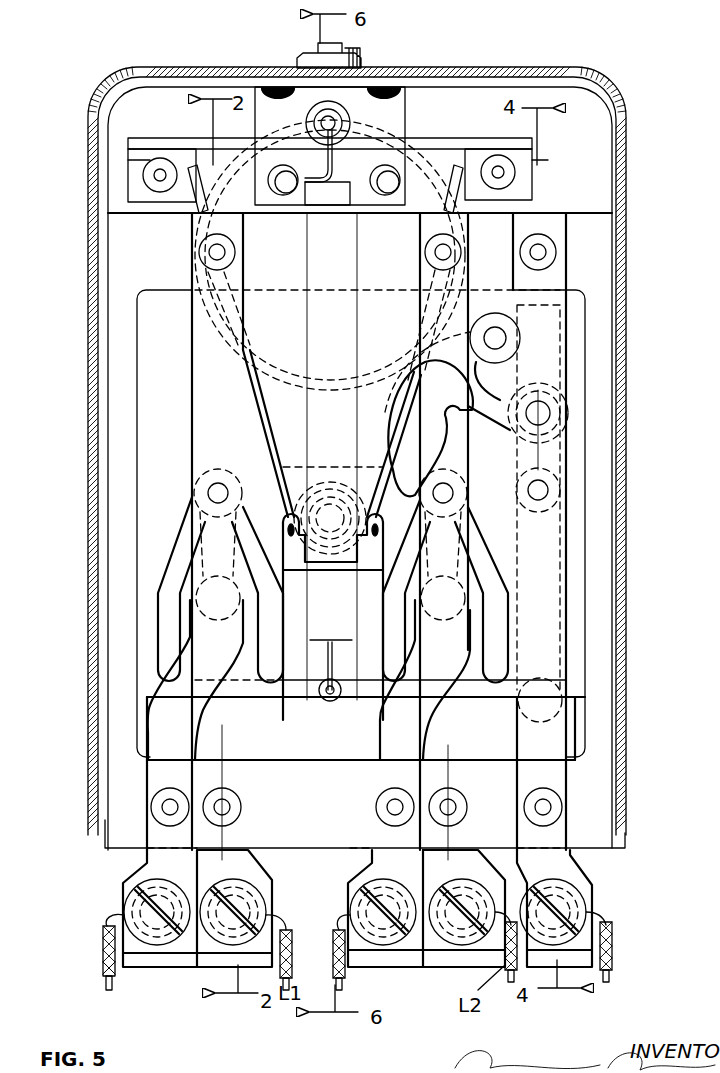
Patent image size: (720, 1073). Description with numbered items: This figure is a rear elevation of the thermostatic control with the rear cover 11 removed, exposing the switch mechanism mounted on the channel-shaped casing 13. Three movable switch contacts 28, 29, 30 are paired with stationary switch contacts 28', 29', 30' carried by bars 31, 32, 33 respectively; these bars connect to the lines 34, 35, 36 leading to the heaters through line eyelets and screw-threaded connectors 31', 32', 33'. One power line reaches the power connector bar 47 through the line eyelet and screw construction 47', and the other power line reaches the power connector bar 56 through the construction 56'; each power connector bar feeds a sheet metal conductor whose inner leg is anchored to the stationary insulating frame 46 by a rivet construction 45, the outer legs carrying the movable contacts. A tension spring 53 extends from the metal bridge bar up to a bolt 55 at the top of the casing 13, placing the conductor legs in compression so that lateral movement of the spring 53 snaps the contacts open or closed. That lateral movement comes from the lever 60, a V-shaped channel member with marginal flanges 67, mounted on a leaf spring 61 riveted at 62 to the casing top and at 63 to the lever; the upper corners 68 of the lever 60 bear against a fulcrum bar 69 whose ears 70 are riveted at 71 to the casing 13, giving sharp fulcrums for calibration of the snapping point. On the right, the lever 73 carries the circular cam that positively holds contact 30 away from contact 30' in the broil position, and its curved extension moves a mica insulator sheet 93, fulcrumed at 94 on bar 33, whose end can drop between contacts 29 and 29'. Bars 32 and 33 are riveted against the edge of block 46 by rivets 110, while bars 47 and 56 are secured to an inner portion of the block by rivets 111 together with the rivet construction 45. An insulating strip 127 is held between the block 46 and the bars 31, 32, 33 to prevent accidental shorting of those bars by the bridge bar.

The rear cover 11 is at (92, 496).
The casing 13 is at (104, 833).
The movable switch contact 28 is at (195, 487).
The stationary switch contact 28' is at (192, 529).
The movable switch contact 29 is at (461, 488).
The stationary switch contact 29' is at (468, 529).
The movable switch contact 30 is at (587, 490).
The stationary switch contact 30' is at (592, 609).
The bar 31 is at (215, 638).
The screw-threaded connector 31' is at (124, 912).
The bar 32 is at (450, 536).
The screw-threaded connector 32' is at (376, 920).
The bar 33 is at (558, 773).
The screw-threaded connector 33' is at (579, 908).
The line 34 is at (103, 953).
The line 35 is at (306, 968).
The line 36 is at (614, 950).
The rivet construction 45 is at (216, 622).
The insulating frame 46 is at (298, 778).
The power connector bar 47 is at (209, 908).
The line eyelet and screw construction 47' is at (255, 912).
The tension spring 53 is at (350, 348).
The bolt 55 is at (348, 52).
The power connector bar 56 is at (466, 908).
The line eyelet and screw construction 56' is at (462, 937).
The lever 60 is at (330, 420).
The leaf spring 61 is at (400, 106).
The rivet 62 is at (281, 86).
The rivet 63 is at (280, 196).
The marginal flanges 67 is at (268, 428).
The corners 68 is at (213, 128).
The fulcrum bar 69 is at (143, 146).
The ears 70 is at (128, 160).
The rivet 71 is at (160, 182).
The lever 73 is at (586, 462).
The mica insulator sheet 93 is at (396, 398).
The fulcrum 94 is at (551, 414).
The rivets 110 is at (236, 254).
The rivets 111 is at (230, 806).
The insulating strip 127 is at (517, 728).